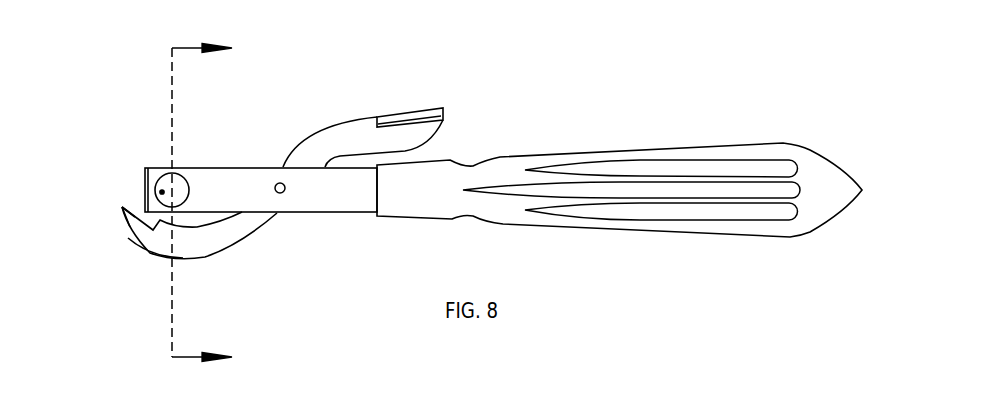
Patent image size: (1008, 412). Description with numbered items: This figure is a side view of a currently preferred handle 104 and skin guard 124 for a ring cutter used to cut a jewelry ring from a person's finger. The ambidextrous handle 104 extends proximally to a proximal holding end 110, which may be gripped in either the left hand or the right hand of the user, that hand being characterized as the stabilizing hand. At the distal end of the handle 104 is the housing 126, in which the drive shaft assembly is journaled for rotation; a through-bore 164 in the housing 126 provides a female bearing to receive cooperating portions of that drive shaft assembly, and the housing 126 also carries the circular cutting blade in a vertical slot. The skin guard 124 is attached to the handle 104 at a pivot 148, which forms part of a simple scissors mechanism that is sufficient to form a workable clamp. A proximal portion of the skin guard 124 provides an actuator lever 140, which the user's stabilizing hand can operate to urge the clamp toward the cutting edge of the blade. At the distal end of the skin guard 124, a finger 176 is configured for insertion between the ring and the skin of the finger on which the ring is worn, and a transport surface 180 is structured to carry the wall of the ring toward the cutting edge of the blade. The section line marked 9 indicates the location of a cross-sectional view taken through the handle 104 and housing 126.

The section line 9- 9 is at (206, 202).
The handle 104 is at (507, 167).
The proximal holding end 110 is at (806, 122).
The skin guard 124 is at (231, 238).
The housing 126 is at (210, 183).
The actuator lever 140 is at (408, 115).
The pivot 148 is at (276, 185).
The through-bore 164 is at (162, 190).
The finger 176 is at (142, 233).
The transport surface 180 is at (131, 200).